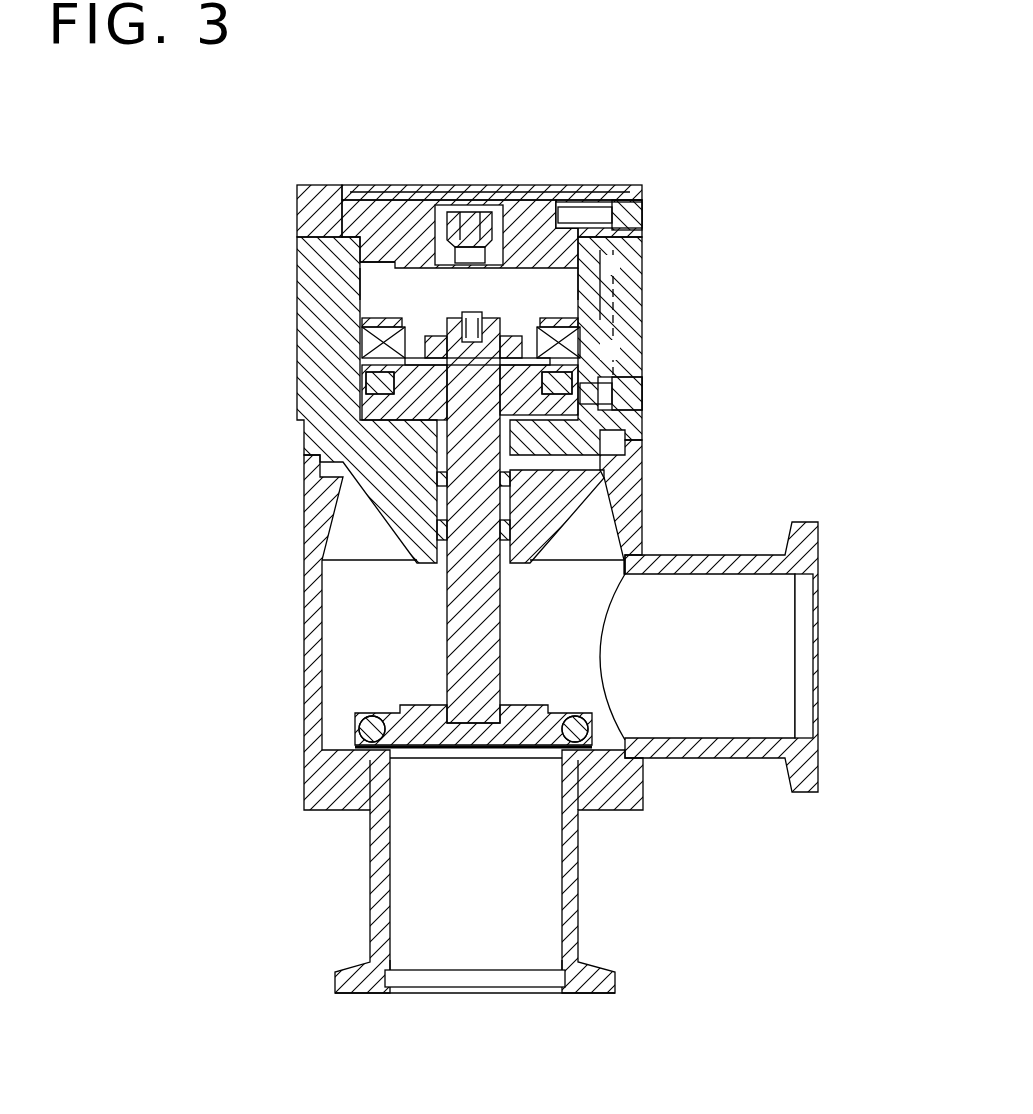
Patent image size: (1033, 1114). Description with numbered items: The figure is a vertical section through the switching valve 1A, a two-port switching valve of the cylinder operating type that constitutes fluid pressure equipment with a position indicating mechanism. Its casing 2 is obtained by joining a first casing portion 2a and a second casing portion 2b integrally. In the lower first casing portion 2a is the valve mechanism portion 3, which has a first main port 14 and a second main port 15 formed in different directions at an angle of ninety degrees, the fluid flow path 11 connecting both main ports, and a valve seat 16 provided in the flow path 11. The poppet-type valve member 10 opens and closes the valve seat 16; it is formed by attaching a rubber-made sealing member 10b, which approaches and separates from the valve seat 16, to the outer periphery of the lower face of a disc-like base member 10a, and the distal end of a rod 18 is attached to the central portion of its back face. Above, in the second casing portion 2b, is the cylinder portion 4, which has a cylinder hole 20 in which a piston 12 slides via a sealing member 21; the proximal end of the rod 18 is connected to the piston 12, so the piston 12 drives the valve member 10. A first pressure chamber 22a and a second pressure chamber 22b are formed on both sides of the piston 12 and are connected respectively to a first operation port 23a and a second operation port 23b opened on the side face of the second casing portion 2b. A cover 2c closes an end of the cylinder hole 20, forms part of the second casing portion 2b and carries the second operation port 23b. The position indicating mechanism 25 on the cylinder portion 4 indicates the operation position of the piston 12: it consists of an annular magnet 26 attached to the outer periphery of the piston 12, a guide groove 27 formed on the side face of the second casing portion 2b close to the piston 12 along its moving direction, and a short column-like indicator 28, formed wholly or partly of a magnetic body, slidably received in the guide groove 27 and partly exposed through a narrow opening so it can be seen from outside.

The switching valve 1A is at (532, 551).
The casing 2 is at (280, 470).
The first casing portion 2a is at (305, 678).
The second casing portion 2b is at (300, 305).
The cover 2c is at (410, 233).
The valve mechanism portion 3 is at (280, 805).
The cylinder portion 4 is at (255, 225).
The valve member 10 is at (492, 768).
The base member 10a is at (378, 765).
The sealing member 10b is at (363, 728).
The fluid flow path 11 is at (566, 648).
The piston 12 is at (365, 397).
The first main port 14 is at (487, 960).
The second main port 15 is at (778, 640).
The valve seat 16 is at (580, 760).
The rod 18 is at (470, 627).
The cylinder hole 20 is at (376, 297).
The sealing member 21 is at (362, 380).
The first pressure chamber 22a is at (632, 427).
The second pressure chamber 22b is at (524, 296).
The first operation port 23a is at (650, 392).
The second operation port 23b is at (648, 213).
The position indicating mechanism 25 is at (730, 278).
The annular magnet 26 is at (572, 340).
The guide groove 27 is at (622, 264).
The indicator 28 is at (622, 350).